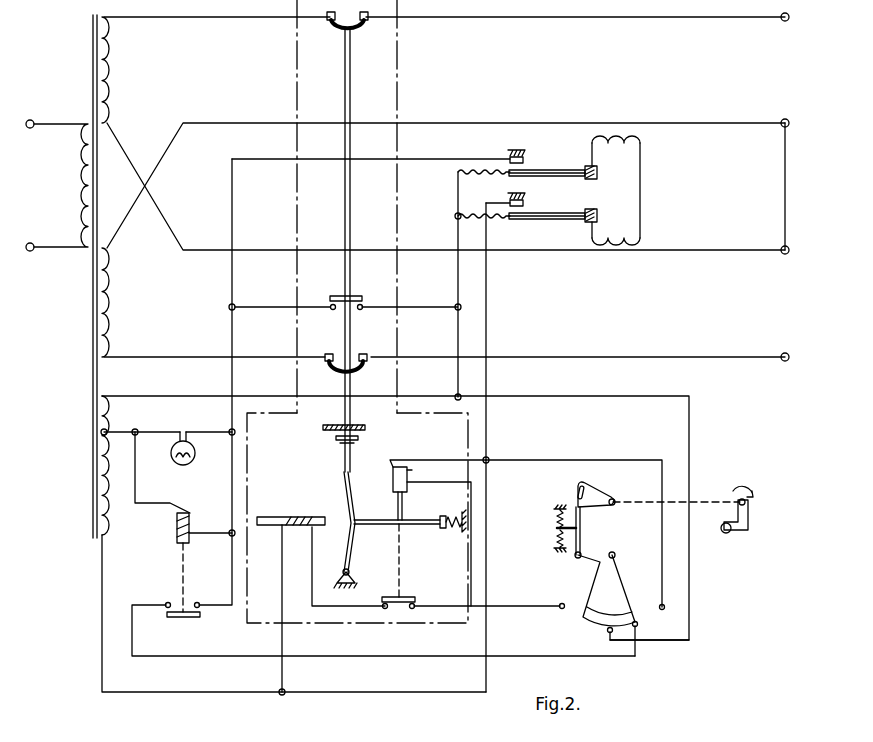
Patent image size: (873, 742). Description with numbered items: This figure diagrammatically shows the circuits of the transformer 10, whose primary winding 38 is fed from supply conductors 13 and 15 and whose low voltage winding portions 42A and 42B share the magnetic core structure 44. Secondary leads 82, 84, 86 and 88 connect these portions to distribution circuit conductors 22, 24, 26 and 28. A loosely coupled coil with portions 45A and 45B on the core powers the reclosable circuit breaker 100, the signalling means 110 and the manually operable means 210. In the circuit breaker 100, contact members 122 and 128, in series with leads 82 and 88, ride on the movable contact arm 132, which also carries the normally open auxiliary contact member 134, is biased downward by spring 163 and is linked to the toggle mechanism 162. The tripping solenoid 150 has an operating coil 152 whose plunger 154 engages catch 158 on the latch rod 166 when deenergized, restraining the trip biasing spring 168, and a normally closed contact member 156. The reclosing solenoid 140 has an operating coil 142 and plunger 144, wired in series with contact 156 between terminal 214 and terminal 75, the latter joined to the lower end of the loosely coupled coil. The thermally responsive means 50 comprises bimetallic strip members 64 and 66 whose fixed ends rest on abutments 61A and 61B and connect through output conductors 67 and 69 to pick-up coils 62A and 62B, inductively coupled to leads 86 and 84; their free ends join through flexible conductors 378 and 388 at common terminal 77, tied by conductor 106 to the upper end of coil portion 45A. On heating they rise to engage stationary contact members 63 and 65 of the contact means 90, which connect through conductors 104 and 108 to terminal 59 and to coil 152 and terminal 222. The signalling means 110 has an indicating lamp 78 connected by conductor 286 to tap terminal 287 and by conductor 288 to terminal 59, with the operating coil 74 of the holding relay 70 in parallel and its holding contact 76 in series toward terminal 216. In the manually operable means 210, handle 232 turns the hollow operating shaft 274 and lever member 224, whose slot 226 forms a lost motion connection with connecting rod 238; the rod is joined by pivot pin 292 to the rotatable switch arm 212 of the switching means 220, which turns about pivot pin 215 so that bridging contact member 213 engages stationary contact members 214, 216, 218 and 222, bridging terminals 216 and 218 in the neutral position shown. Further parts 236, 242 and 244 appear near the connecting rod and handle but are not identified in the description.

The transformer 10 is at (357, 353).
The supply conductor 13 is at (50, 123).
The supply conductor 15 is at (50, 249).
The distribution circuit conductor 22 is at (784, 21).
The distribution circuit conductor 24 is at (784, 254).
The distribution circuit conductor 26 is at (784, 119).
The distribution circuit conductor 28 is at (784, 354).
The primary winding 38 is at (82, 184).
The first low voltage winding portion 42A is at (110, 70).
The second low voltage winding portion 42B is at (112, 312).
The magnetic core structure 44 is at (92, 336).
The first coil portion 45A is at (105, 395).
The second coil portion 45B is at (110, 523).
The thermally responsive means 50 is at (601, 204).
The terminal 59 is at (236, 305).
The abutment 61A is at (598, 172).
The abutment 61B is at (598, 216).
The first pick-up coil 62A is at (641, 137).
The second pick-up coil 62B is at (641, 240).
The stationary contact member 63 is at (524, 158).
The first bimetallic strip member 64 is at (598, 178).
The stationary contact member 65 is at (524, 201).
The second bimetallic strip member 66 is at (598, 226).
The output conductor 67 is at (591, 149).
The output conductor 69 is at (592, 232).
The holding relay 70 is at (142, 571).
The operating coil 74 is at (190, 517).
The terminal 75 is at (279, 690).
The holding contact 76 is at (189, 620).
The common junction terminal 77 is at (455, 215).
The indicating lamp 78 is at (190, 463).
The secondary lead 82 is at (283, 19).
The secondary lead 84 is at (202, 249).
The secondary lead 86 is at (260, 122).
The secondary lead 88 is at (198, 356).
The contact means 90 is at (482, 146).
The reclosable circuit breaker 100 is at (399, 80).
The conductor 104 is at (445, 157).
The conductor 106 is at (456, 284).
The conductor 108 is at (489, 284).
The signalling means 110 is at (140, 490).
The circuit interrupting contact member 122 is at (334, 26).
The circuit interrupting contact member 128 is at (360, 367).
The movable contact arm 132 is at (352, 211).
The auxiliary contact member 134 is at (357, 295).
The reclosing solenoid 140 is at (258, 497).
The operating coil 142 is at (308, 517).
The plunger 144 is at (318, 526).
The tripping solenoid 150 is at (382, 446).
The operating coil 152 is at (393, 472).
The plunger 154 is at (396, 514).
The contact member 156 is at (416, 598).
The catch 158 is at (403, 517).
The toggle mechanism 162 is at (351, 556).
The spring 163 is at (335, 438).
The latch rod 166 is at (408, 535).
The trip biasing spring 168 is at (452, 530).
The manually operable means 210 is at (704, 587).
The rotatable switch arm 212 is at (633, 600).
The movable bridging contact member 213 is at (582, 619).
The stationary contact member 214 is at (560, 609).
The pivot pin 215 is at (616, 555).
The stationary contact member 216 is at (637, 628).
The stationary contact member 218 is at (608, 632).
The switching means 220 is at (511, 601).
The stationary contact member 222 is at (585, 547).
The lever member 224 is at (600, 493).
The slot 226 is at (579, 486).
The handle 232 is at (750, 533).
The spring 236 is at (559, 512).
The connecting rod 238 is at (583, 523).
The pin 242 is at (726, 534).
The cross bar 244 is at (556, 528).
The operating shaft 274 is at (712, 501).
The conductor 286 is at (153, 431).
The tap connection terminal 287 is at (101, 435).
The conductor 288 is at (203, 431).
The pivot pin 292 is at (577, 558).
The flexible conductor 378 is at (466, 171).
The flexible conductor 388 is at (466, 220).